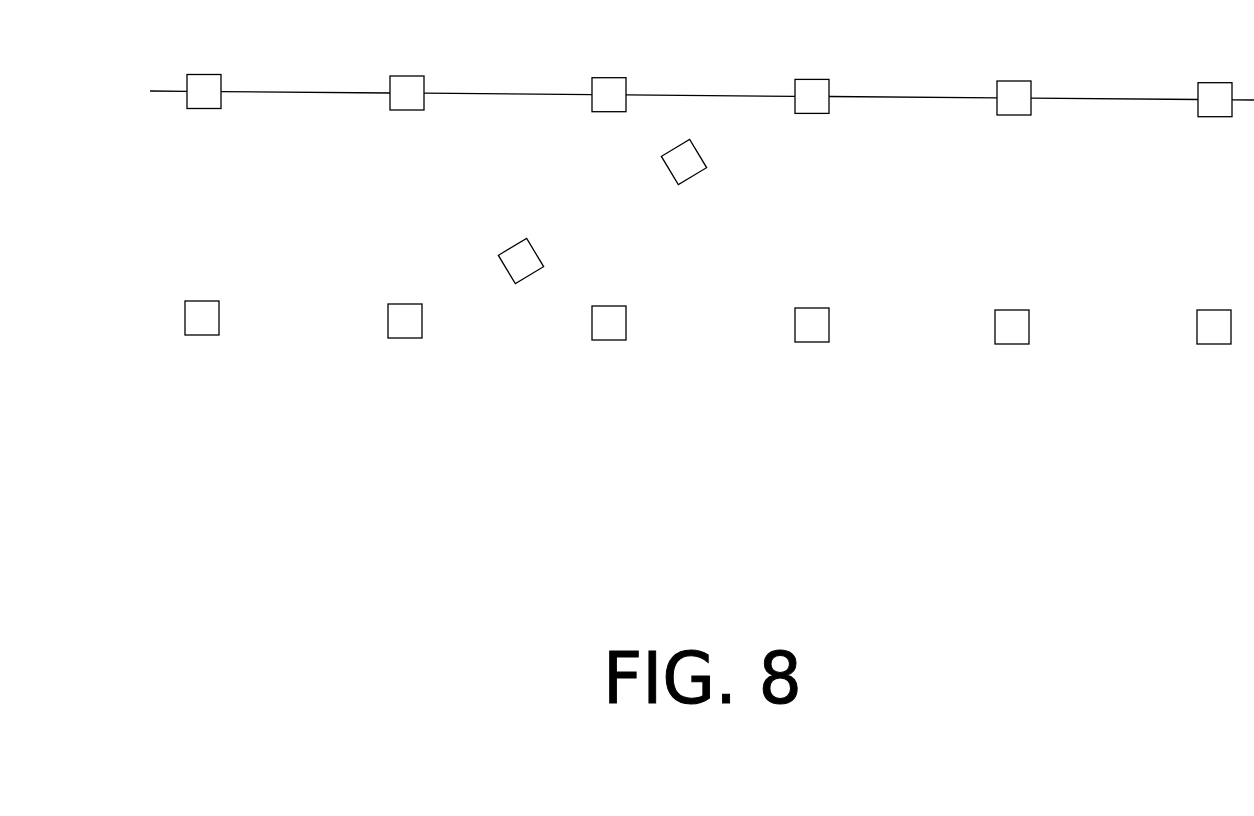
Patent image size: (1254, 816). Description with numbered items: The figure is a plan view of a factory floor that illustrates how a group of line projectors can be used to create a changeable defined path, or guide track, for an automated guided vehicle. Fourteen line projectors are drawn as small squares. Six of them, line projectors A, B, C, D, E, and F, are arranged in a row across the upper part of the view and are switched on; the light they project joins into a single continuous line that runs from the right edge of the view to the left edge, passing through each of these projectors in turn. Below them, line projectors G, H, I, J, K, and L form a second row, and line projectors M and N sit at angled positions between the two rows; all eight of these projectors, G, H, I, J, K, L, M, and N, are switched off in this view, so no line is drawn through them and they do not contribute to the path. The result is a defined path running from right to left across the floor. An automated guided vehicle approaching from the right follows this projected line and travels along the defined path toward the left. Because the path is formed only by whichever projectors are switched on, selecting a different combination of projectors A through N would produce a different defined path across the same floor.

The line projector A is at (1215, 75).
The line projector B is at (1014, 74).
The line projector C is at (812, 71).
The line projector D is at (609, 69).
The line projector E is at (407, 68).
The line projector F is at (204, 66).
The line projector G is at (1214, 352).
The line projector H is at (1012, 351).
The line projector I is at (812, 349).
The line projector J is at (609, 347).
The line projector K is at (405, 345).
The line projector L is at (202, 342).
The line projector M is at (690, 173).
The line projector N is at (534, 263).